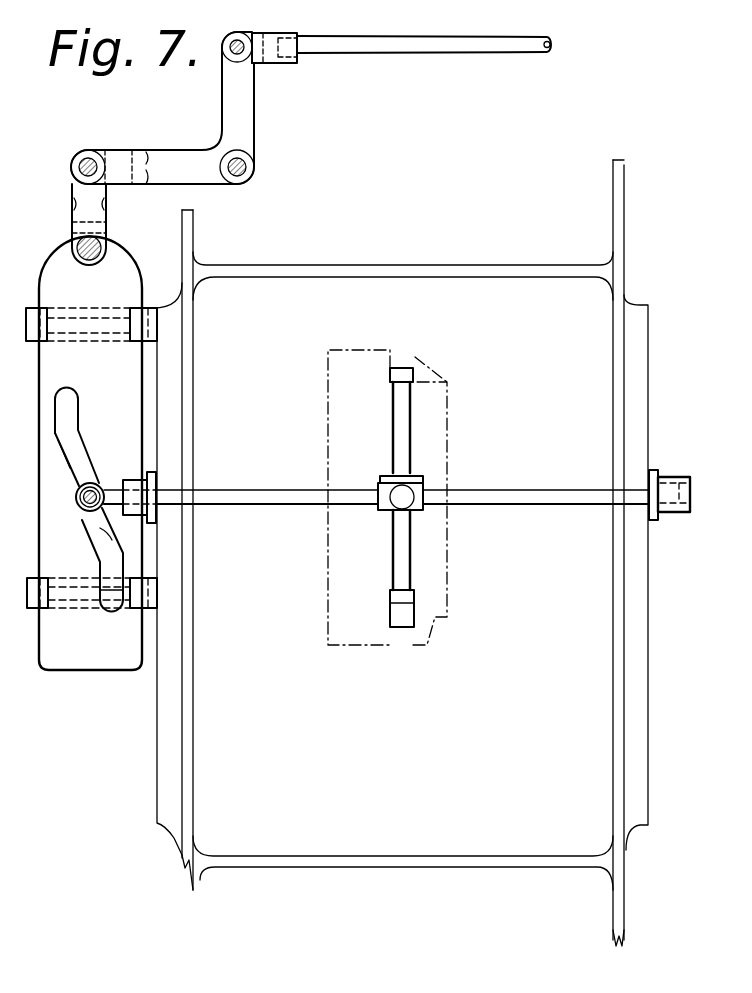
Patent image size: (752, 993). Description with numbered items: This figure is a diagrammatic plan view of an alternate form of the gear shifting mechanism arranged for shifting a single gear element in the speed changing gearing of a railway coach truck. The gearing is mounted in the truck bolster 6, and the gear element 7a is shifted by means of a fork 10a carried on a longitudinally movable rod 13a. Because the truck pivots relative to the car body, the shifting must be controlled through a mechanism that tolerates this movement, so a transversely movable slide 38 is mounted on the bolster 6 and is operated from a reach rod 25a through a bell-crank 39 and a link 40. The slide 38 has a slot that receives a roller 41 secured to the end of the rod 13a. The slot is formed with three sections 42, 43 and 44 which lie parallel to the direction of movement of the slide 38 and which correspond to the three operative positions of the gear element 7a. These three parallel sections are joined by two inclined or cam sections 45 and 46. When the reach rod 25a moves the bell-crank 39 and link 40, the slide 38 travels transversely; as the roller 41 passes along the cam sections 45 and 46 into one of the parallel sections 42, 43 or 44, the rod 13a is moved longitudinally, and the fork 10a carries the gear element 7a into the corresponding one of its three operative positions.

The truck bolster 6 is at (624, 268).
The gear element 7a is at (372, 348).
The fork 10a is at (408, 398).
The longitudinally movable rod 13a is at (265, 493).
The reach rod 25a is at (428, 43).
The transversely movable slide 38 is at (52, 365).
The bell-crank 39 is at (243, 118).
The link 40 is at (98, 204).
The roller 41 is at (97, 484).
The slot section 42 is at (70, 396).
The slot section 43 is at (83, 522).
The slot section 44 is at (103, 605).
The inclined cam section 45 is at (70, 446).
The inclined cam section 46 is at (110, 535).